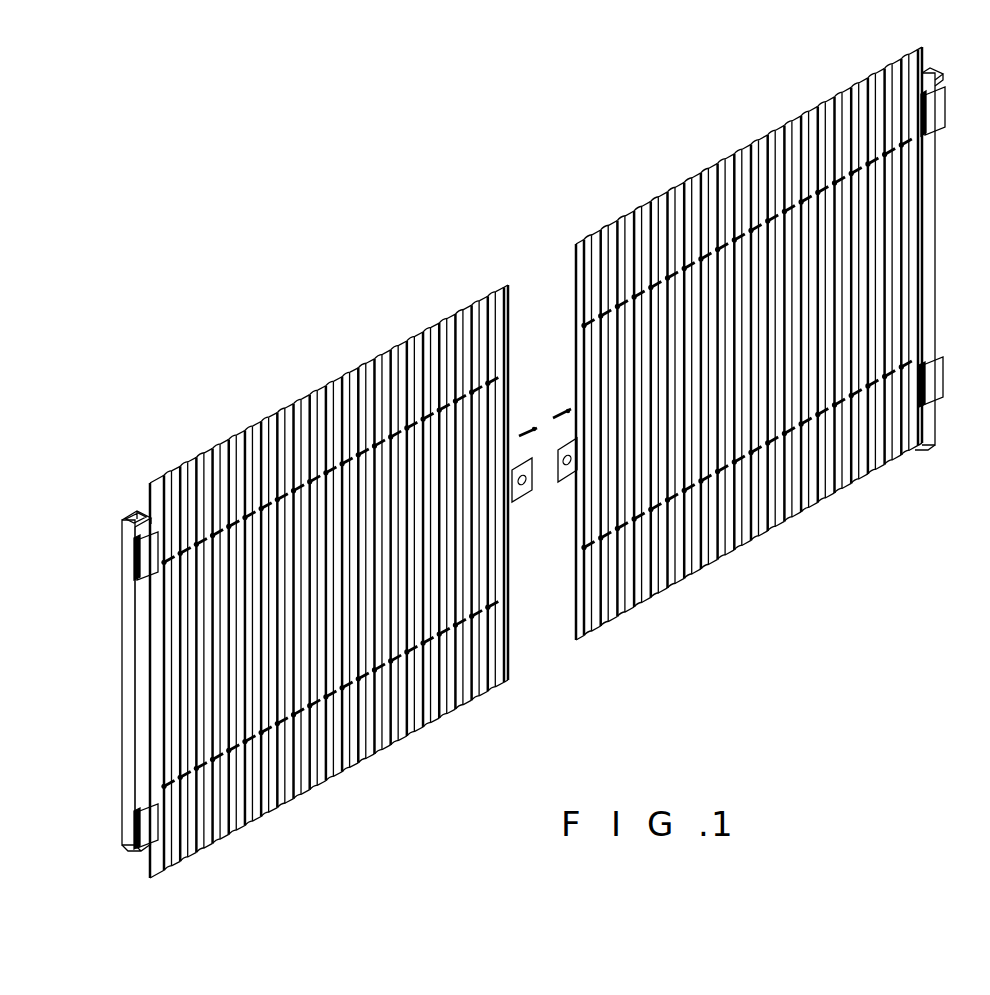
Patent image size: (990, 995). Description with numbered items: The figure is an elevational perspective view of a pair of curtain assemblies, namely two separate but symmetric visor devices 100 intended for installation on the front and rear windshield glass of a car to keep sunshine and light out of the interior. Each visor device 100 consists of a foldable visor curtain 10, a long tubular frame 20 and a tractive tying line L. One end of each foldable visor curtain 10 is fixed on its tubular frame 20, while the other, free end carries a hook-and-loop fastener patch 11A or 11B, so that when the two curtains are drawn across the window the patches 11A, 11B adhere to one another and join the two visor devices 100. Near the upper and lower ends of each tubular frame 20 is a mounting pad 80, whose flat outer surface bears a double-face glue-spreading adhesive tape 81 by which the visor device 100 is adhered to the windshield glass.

The visor device 100 is at (550, 462).
The foldable visor curtain 10 is at (401, 360).
The tubular frame 20 is at (932, 258).
The mounting pad 80 is at (556, 468).
The double-face adhesive tape 81 is at (944, 375).
The hook-and-loop fastener patch 11A is at (578, 490).
The hook-and-loop fastener patch 11B is at (510, 608).
The tractive tying line L is at (507, 551).